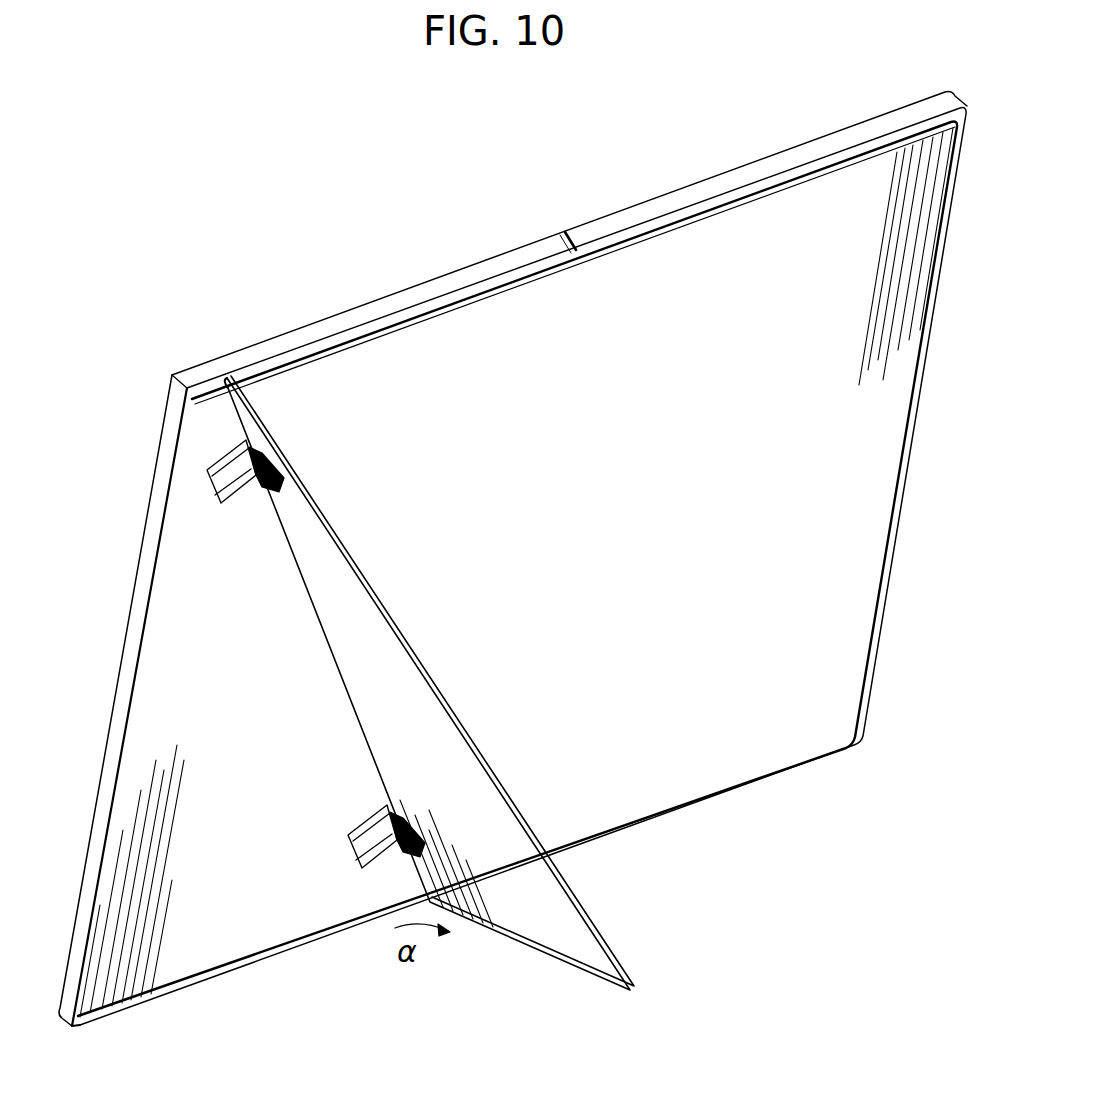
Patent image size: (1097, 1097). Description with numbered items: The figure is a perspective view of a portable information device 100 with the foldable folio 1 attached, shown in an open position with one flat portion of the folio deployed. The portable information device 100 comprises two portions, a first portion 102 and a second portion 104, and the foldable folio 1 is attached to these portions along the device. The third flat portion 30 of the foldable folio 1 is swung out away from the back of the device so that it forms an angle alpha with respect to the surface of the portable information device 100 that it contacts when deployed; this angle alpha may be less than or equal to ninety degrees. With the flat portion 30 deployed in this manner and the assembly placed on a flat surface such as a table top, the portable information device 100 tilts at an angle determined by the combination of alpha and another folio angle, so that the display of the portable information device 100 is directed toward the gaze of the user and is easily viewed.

The foldable folio 1 is at (730, 797).
The third flat portion 30 is at (538, 923).
The portable information device 100 is at (228, 354).
The first portion 102 is at (522, 258).
The second portion 104 is at (655, 210).